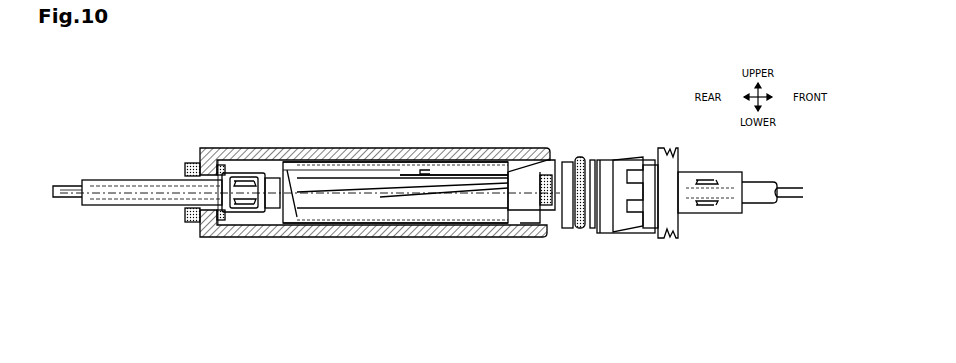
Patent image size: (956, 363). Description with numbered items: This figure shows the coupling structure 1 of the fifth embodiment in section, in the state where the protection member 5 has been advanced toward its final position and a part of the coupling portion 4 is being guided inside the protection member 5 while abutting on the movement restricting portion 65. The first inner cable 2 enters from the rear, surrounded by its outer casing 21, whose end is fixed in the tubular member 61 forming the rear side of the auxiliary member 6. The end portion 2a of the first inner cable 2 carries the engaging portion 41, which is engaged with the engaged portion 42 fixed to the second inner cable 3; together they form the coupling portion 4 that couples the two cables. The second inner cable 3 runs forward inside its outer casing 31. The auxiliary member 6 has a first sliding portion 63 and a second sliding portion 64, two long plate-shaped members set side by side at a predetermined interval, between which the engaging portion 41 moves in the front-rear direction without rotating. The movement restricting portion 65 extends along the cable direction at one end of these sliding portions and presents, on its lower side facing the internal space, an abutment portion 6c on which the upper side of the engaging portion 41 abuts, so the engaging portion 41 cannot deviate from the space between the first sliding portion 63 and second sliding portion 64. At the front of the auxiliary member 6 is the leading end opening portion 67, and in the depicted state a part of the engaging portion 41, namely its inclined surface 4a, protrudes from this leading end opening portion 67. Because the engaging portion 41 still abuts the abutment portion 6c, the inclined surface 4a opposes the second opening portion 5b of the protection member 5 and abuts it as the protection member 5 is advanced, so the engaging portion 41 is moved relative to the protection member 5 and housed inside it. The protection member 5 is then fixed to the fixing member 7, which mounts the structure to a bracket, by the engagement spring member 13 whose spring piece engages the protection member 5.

The coupling structure 1 is at (85, 78).
The first inner cable 2 is at (62, 198).
The end portion 2a is at (452, 192).
The outer casing 21 is at (126, 200).
The second inner cable 3 is at (784, 190).
The outer casing 31 is at (755, 200).
The coupling portion 4 is at (565, 276).
The inclined surface 4a is at (527, 152).
The engaging portion 41 is at (588, 196).
The engaged portion 42 is at (550, 226).
The protection member 5 is at (237, 148).
The second opening portion 5b is at (552, 160).
The auxiliary member 6 is at (407, 218).
The abutment portion 6c is at (418, 170).
The tubular member 61 is at (245, 213).
The first sliding portion 63 is at (478, 168).
The second sliding portion 64 is at (350, 200).
The movement restricting portion 65 is at (352, 162).
The leading end opening portion 67 is at (538, 212).
The fixing member 7 is at (668, 168).
The engagement spring member 13 is at (630, 157).